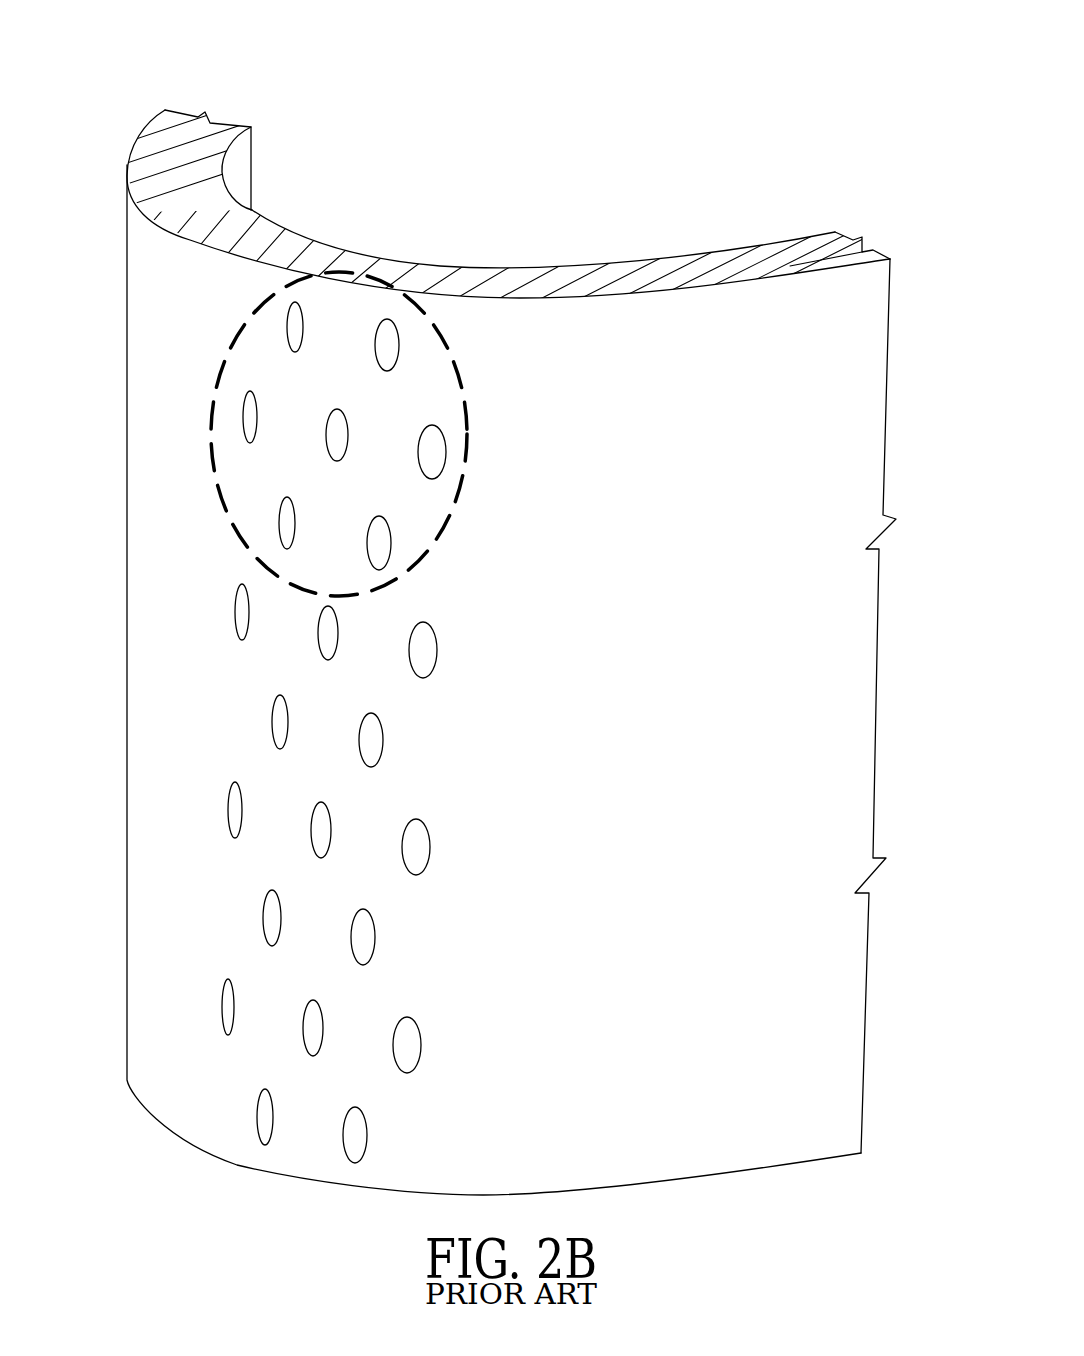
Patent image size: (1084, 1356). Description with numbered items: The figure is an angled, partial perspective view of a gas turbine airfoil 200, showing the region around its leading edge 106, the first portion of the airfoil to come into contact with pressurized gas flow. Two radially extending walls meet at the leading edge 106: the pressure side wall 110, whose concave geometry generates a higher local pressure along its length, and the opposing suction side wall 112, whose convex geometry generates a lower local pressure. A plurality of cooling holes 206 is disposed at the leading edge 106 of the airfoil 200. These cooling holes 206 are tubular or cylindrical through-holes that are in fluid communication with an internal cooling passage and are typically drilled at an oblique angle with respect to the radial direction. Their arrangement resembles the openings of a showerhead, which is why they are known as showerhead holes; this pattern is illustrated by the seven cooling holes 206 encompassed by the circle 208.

The gas turbine airfoil 200 is at (170, 72).
The suction side wall 112 is at (127, 163).
The pressure side wall 110 is at (767, 662).
The leading edge 106 is at (295, 1066).
The cooling holes 206 is at (287, 522).
The circle 208 is at (205, 513).